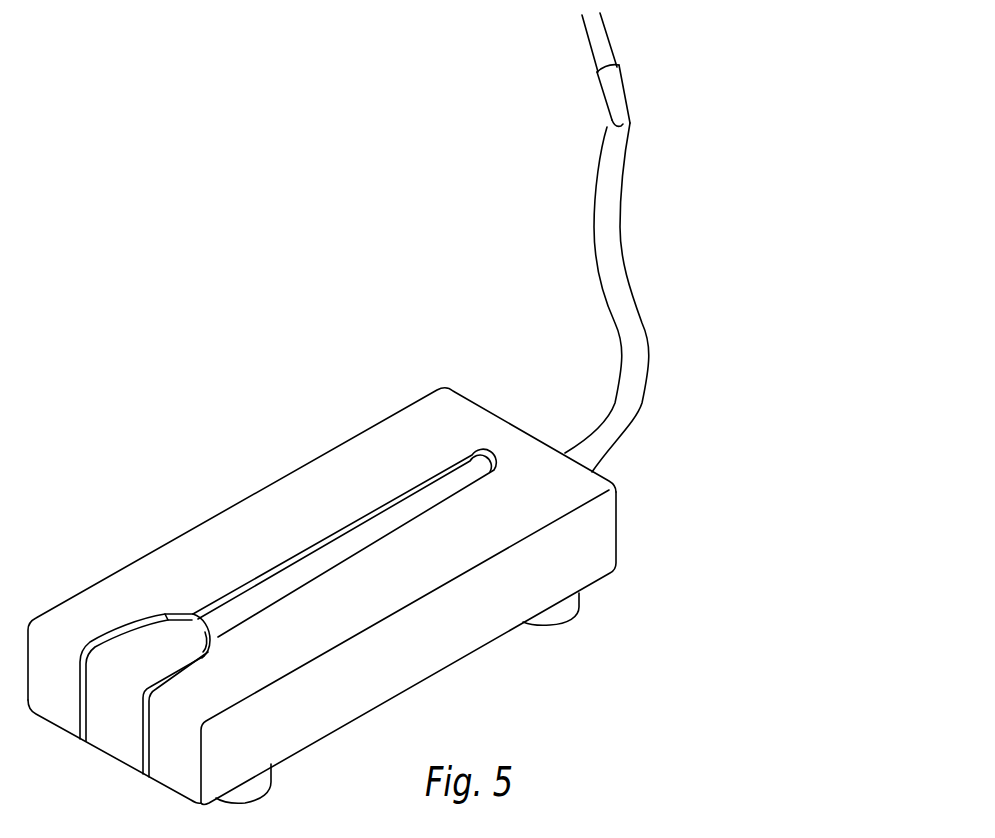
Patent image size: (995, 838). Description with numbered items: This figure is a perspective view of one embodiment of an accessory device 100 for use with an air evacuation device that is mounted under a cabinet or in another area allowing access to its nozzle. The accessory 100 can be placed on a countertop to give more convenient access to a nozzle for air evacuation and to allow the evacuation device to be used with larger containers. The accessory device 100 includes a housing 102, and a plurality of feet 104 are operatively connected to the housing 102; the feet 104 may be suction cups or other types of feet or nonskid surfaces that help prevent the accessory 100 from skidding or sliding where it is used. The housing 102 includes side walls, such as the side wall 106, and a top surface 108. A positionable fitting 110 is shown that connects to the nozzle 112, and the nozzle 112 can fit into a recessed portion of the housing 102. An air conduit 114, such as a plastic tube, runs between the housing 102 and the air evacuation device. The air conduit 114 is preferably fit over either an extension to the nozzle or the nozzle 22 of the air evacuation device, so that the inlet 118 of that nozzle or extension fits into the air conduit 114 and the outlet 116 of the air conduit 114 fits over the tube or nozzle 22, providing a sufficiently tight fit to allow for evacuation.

The accessory device 100 is at (140, 423).
The housing 102 is at (472, 652).
The feet 104 is at (565, 620).
The side wall 106 is at (413, 667).
The top surface 108 is at (277, 502).
The positionable fitting 110 is at (118, 745).
The nozzle 112 is at (435, 490).
The air conduit 114 is at (615, 253).
The outlet 116 is at (619, 66).
The inlet 118 is at (614, 128).
The nozzle 22 is at (598, 32).